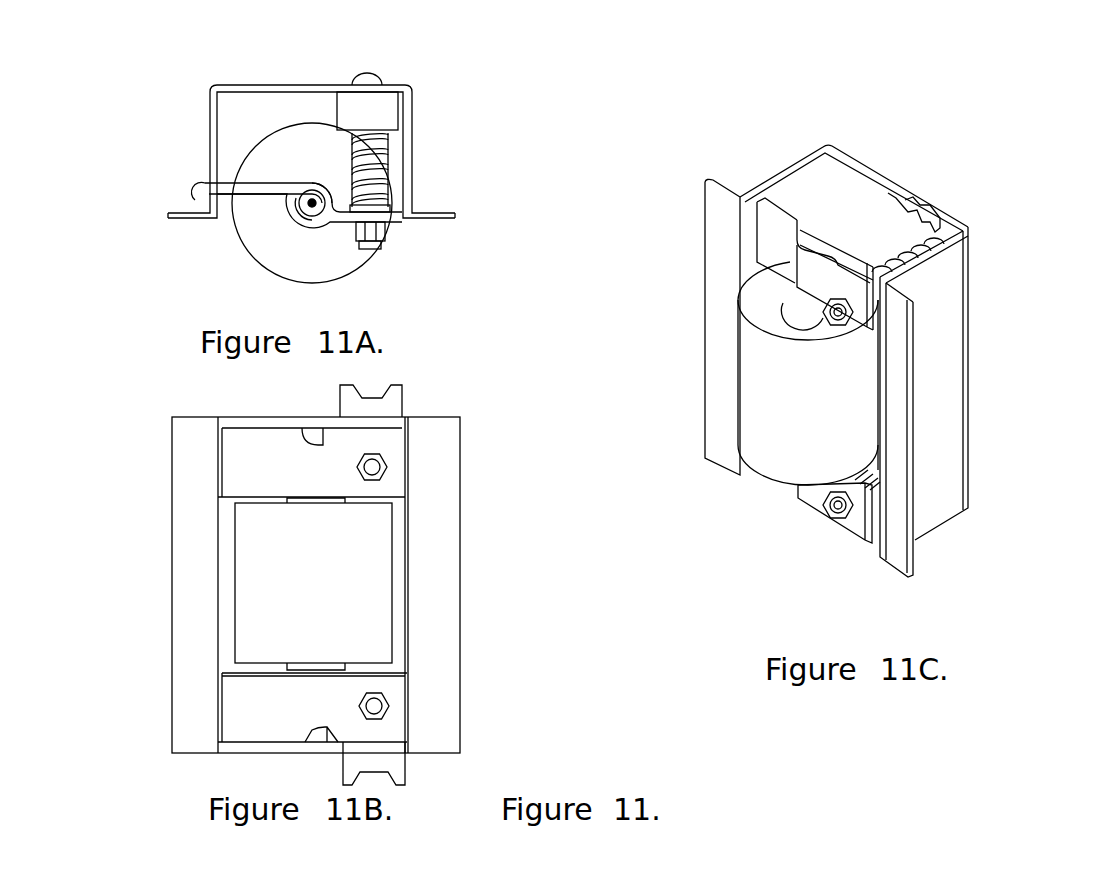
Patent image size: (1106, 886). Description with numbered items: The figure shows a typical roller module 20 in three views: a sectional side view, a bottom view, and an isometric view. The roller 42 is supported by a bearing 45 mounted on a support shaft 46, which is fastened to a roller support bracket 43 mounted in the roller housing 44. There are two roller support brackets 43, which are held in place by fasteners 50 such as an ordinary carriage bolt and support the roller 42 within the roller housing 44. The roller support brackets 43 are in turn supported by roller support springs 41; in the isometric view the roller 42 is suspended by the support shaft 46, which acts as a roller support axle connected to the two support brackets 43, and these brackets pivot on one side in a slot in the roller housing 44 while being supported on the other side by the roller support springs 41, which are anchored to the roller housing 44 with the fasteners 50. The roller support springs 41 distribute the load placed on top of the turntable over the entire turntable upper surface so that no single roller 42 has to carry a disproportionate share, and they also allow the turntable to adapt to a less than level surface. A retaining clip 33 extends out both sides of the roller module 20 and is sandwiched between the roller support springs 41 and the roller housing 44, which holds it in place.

In FIG. 11A, the roller module 20 is at (318, 67).
In FIG. 11B, the roller module 20 is at (157, 563).
In FIG. 11C, the roller module 20 is at (882, 586).
In FIG. 11B, the retaining clip 33 is at (407, 406).
In FIG. 11C, the retaining clip 33 is at (880, 200).
In FIG. 11A, the roller support spring 41 is at (392, 152).
In FIG. 11C, the roller support spring 41 is at (912, 238).
In FIG. 11A, the roller 42 is at (282, 250).
In FIG. 11B, the roller 42 is at (263, 537).
In FIG. 11C, the roller 42 is at (763, 445).
In FIG. 11A, the roller support bracket 43 is at (243, 182).
In FIG. 11B, the roller support bracket 43 is at (270, 463).
In FIG. 11C, the roller support bracket 43 is at (778, 235).
In FIG. 11A, the roller housing 44 is at (413, 190).
In FIG. 11B, the roller housing 44 is at (437, 638).
In FIG. 11C, the roller housing 44 is at (948, 338).
In FIG. 11A, the bearing 45 is at (330, 167).
In FIG. 11A, the support shaft 46 is at (310, 202).
In FIG. 11C, the support shaft 46 is at (823, 245).
In FIG. 11A, the fastener 50 is at (387, 242).
In FIG. 11B, the fastener 50 is at (392, 470).
In FIG. 11C, the fastener 50 is at (858, 323).